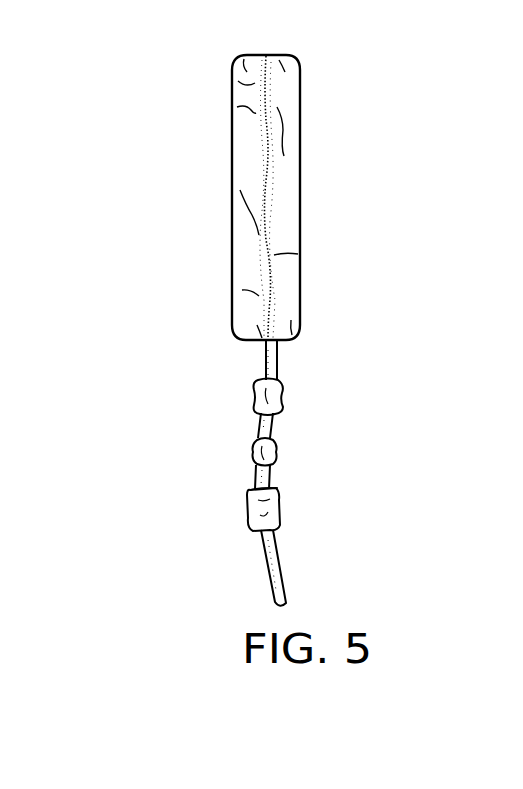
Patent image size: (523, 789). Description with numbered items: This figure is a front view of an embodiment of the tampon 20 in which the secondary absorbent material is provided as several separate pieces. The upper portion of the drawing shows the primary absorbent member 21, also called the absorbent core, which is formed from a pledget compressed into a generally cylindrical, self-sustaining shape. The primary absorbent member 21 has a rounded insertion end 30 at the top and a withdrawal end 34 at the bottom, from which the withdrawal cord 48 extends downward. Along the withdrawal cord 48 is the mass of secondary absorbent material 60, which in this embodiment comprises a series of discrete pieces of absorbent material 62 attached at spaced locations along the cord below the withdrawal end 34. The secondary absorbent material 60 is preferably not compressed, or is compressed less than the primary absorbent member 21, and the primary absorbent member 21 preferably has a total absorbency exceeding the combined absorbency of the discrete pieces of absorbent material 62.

The tampon 20 is at (188, 58).
The primary absorbent member 21 is at (294, 146).
The insertion end 30 is at (289, 57).
The withdrawal end 34 is at (296, 336).
The withdrawal cord 48 is at (280, 562).
The mass of secondary absorbent material 60 is at (298, 380).
The discrete pieces of absorbent material 62 is at (253, 410).